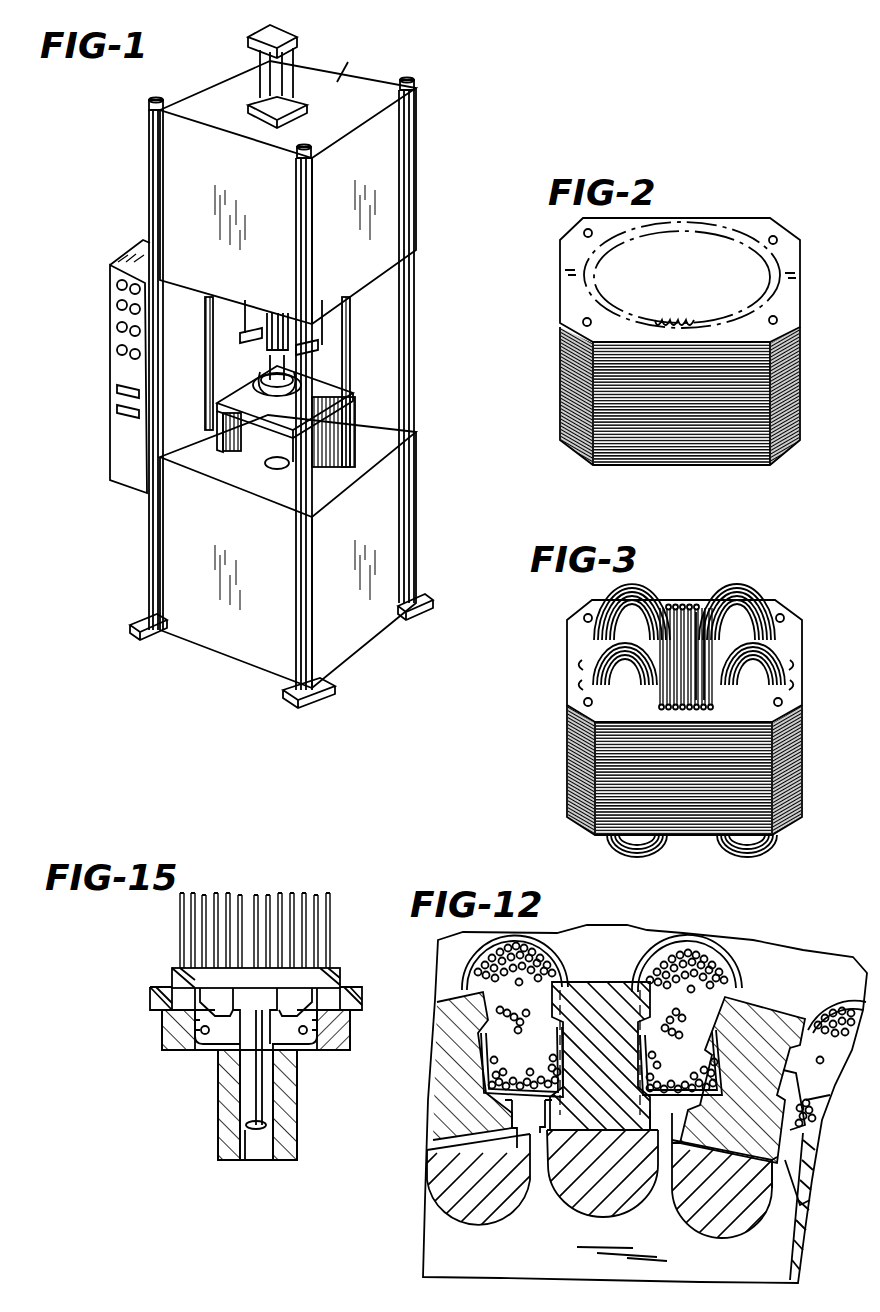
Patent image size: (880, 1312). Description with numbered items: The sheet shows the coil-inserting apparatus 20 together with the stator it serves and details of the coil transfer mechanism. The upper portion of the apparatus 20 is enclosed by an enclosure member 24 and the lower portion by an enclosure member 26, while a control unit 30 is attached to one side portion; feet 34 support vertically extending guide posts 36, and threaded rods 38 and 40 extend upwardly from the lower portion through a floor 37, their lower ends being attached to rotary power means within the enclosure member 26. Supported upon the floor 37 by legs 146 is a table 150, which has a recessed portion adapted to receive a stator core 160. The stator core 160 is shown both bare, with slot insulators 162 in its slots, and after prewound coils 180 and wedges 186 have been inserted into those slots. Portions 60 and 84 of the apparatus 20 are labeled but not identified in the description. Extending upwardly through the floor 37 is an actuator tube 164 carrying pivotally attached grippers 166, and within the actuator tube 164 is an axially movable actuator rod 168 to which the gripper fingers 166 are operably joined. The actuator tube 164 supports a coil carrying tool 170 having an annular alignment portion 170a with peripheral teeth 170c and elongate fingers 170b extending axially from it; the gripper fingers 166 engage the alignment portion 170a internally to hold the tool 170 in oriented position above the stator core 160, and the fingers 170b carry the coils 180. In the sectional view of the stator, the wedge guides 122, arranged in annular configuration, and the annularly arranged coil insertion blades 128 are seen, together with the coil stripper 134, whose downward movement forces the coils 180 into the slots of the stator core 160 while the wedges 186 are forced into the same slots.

In FIG. 1, the apparatus 20 is at (118, 117).
In FIG. 1, the enclosure member 24 is at (155, 168).
In FIG. 1, the enclosure member 26 is at (178, 548).
In FIG. 1, the control unit 30 is at (104, 270).
In FIG. 1, the feet 34 is at (135, 625).
In FIG. 1, the guide posts 36 is at (416, 320).
In FIG. 1, the floor 37 is at (212, 466).
In FIG. 1, the threaded rod 38 is at (352, 317).
In FIG. 1, the threaded rod 40 is at (200, 305).
In FIG. 1, the upper housing top 60 is at (348, 62).
In FIG. 1, the cylinder 84 is at (250, 52).
In FIG. 12, the wedge guides 122 is at (596, 981).
In FIG. 12, the coil insertion blades 128 is at (518, 1185).
In FIG. 12, the coil stripper 134 is at (652, 1240).
In FIG. 1, the legs 146 is at (216, 425).
In FIG. 1, the table 150 is at (326, 396).
In FIG. 2, the stator core 160 is at (561, 358).
In FIG. 3, the stator core 160 is at (568, 750).
In FIG. 12, the stator core 160 is at (794, 955).
In FIG. 3, the slot insulators 162 is at (688, 603).
In FIG. 12, the slot insulators 162 is at (555, 935).
In FIG. 1, the actuator tube 164 is at (262, 470).
In FIG. 15, the actuator tube 164 is at (222, 1120).
In FIG. 15, the grippers 166 is at (195, 1018).
In FIG. 15, the actuator rod 168 is at (250, 1085).
In FIG. 15, the coil carrying tool 170 is at (238, 951).
In FIG. 15, the annular alignment portion 170a is at (172, 985).
In FIG. 15, the elongate fingers 170b is at (240, 893).
In FIG. 15, the peripheral teeth 170c is at (150, 999).
In FIG. 3, the prewound coils 180 is at (745, 592).
In FIG. 12, the prewound coils 180 is at (682, 957).
In FIG. 3, the wedges 186 is at (737, 620).
In FIG. 12, the wedges 186 is at (478, 1066).